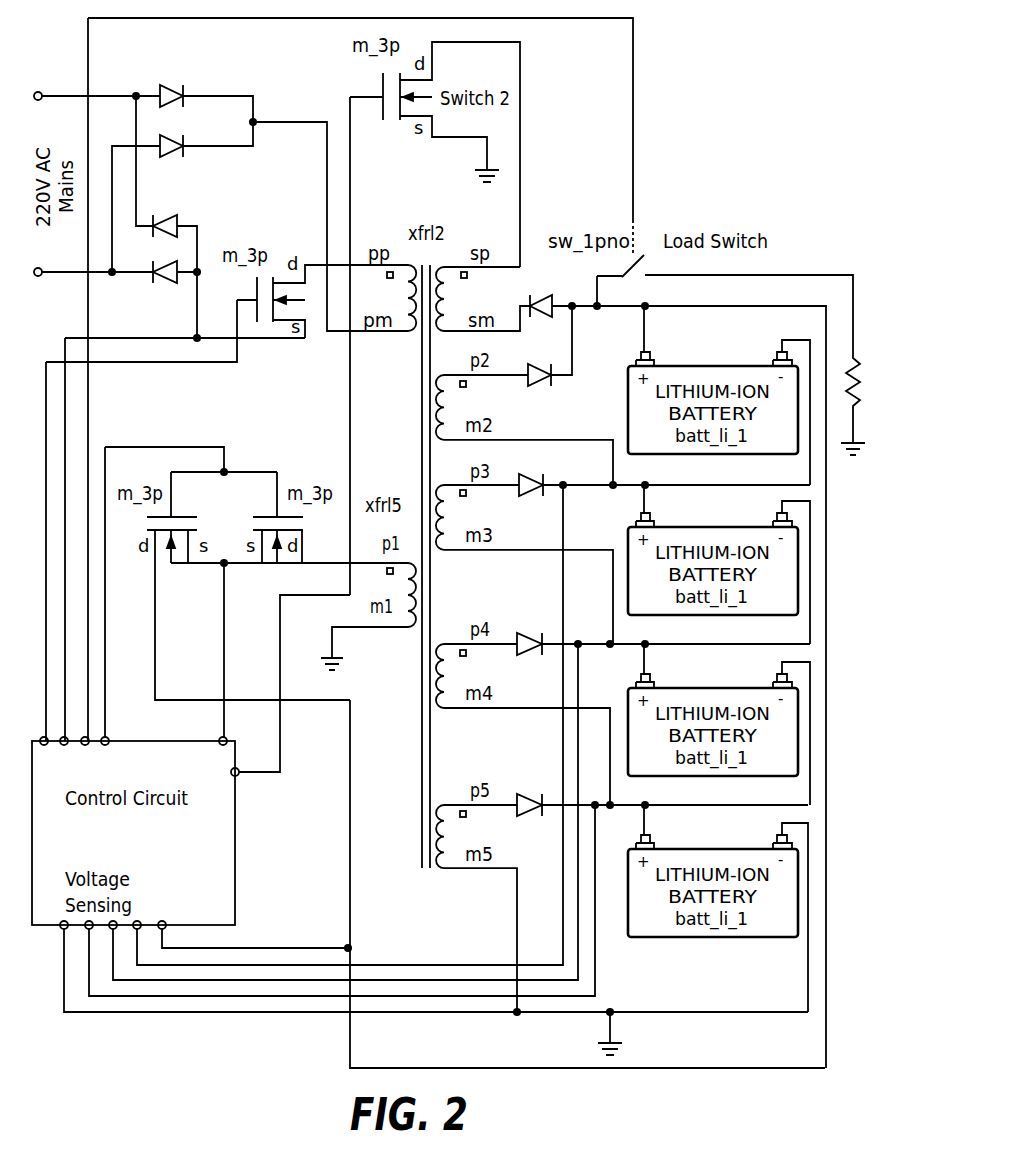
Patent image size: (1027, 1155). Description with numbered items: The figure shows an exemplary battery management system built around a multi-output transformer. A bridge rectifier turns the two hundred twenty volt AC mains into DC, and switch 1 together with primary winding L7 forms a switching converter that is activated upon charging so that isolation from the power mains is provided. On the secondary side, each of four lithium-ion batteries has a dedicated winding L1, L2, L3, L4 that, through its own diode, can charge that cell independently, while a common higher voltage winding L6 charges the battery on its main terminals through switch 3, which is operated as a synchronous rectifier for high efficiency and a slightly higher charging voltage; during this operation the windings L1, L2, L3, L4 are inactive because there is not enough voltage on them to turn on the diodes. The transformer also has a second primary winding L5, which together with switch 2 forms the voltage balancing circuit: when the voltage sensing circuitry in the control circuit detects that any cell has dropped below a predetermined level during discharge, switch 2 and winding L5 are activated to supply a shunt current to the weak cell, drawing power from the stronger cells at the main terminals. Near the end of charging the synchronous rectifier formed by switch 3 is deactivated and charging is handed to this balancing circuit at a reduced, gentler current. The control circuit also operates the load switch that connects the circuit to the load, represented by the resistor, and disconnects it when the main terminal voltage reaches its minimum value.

The switch 2 is at (849, 401).
The switch 1 is at (227, 285).
The switch 3 is at (256, 573).
The winding L1 is at (524, 430).
The winding L2 is at (524, 564).
The winding L3 is at (523, 724).
The winding L4 is at (476, 908).
The winding L5 is at (483, 299).
The winding L6 is at (368, 616).
The winding L7 is at (389, 298).